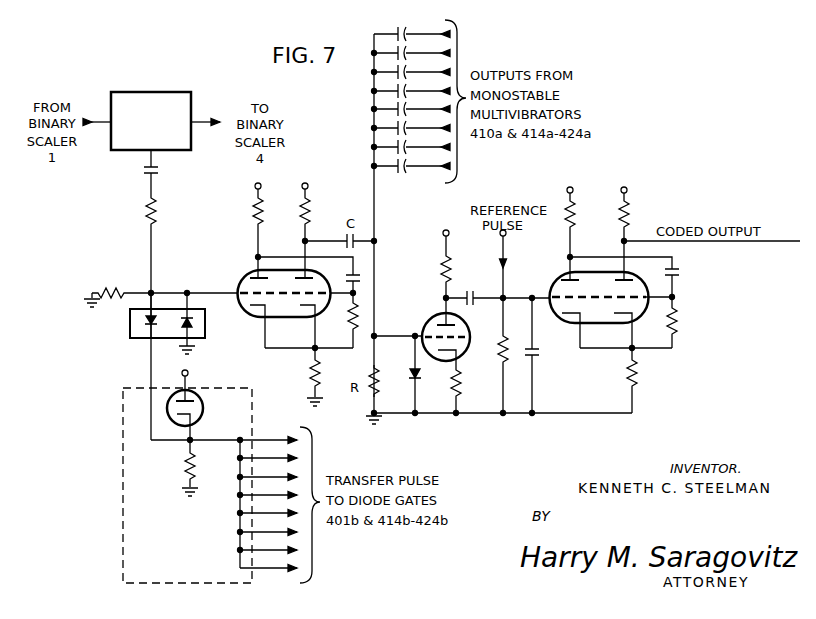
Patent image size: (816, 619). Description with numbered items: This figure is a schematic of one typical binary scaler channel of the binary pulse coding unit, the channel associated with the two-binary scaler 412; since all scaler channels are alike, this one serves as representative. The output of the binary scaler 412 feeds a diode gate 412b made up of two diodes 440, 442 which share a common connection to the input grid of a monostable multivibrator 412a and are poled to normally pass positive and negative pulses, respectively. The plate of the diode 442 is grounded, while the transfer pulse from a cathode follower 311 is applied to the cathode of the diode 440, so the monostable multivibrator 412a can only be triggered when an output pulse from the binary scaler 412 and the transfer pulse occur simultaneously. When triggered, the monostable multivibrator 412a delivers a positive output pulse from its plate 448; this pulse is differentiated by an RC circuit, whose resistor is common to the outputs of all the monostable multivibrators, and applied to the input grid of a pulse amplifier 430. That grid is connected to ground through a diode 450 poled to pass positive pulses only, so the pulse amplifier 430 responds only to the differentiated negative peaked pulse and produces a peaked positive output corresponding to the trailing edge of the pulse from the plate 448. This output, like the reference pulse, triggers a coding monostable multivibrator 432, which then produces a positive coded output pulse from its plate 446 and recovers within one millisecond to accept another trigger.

The cathode follower 311 is at (123, 478).
The 2-binary scaler 412 is at (186, 151).
The monostable multivibrator 412a is at (267, 265).
The diode gate 412b is at (159, 329).
The pulse amplifier 430 is at (426, 327).
The coding monostable multivibrator 432 is at (626, 323).
The diode 440 is at (148, 325).
The diode 442 is at (196, 321).
The plate 446 is at (599, 267).
The plate 448 is at (300, 276).
The diode 450 is at (412, 375).